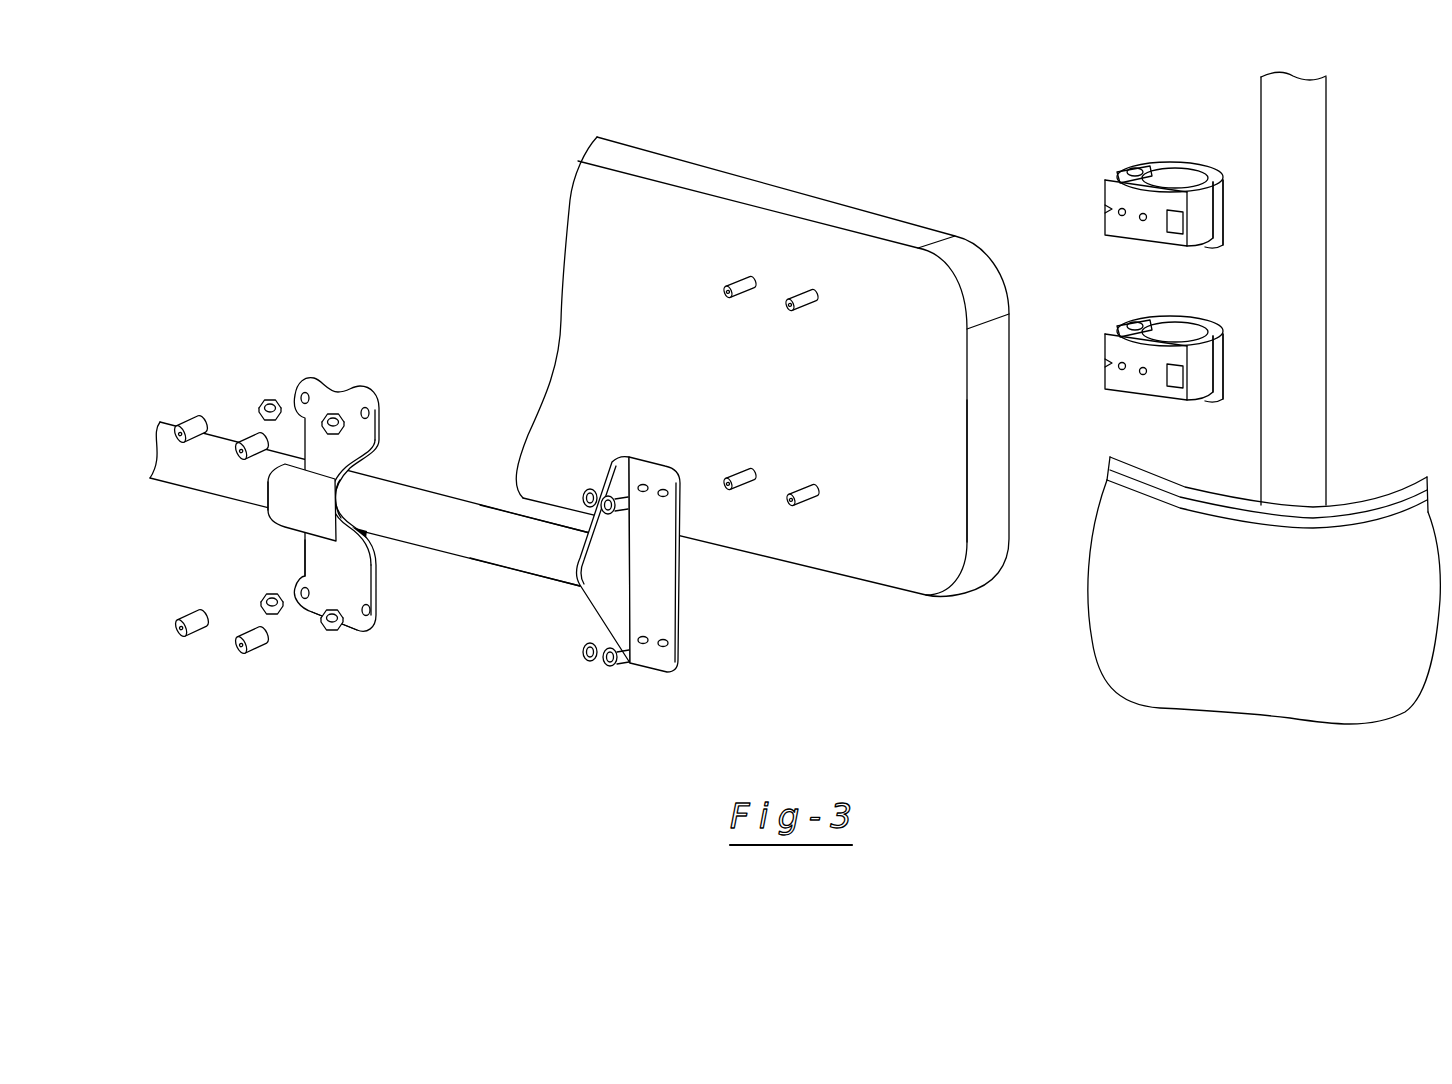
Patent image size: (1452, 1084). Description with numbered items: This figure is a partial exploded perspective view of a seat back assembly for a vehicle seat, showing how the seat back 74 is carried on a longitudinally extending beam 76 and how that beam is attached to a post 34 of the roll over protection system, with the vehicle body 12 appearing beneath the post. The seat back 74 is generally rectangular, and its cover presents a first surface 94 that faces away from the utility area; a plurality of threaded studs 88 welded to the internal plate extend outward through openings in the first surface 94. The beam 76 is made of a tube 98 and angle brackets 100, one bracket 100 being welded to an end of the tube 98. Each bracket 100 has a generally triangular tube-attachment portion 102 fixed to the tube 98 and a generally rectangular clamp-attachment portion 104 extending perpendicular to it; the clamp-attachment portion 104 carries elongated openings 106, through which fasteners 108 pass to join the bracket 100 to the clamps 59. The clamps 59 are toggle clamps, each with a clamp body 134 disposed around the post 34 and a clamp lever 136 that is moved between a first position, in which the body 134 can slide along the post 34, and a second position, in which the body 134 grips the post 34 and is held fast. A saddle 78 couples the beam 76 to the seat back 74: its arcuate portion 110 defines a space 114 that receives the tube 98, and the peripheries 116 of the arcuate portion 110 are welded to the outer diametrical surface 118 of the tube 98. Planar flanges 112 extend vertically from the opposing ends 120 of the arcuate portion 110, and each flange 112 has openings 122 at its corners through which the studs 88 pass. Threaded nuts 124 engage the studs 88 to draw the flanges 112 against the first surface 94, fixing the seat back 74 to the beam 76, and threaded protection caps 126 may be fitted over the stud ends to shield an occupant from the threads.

The vehicle body 12 is at (1265, 685).
The post 34 is at (1318, 278).
The clamp 59 is at (1225, 251).
The seat back 74 is at (835, 186).
The longitudinally extending beam 76 is at (370, 528).
The saddle 78 is at (324, 447).
The threaded stud 88 is at (738, 296).
The first surface 94 is at (916, 556).
The tube 98 is at (359, 502).
The angle bracket 100 is at (644, 573).
The tube-attachment portion 102 is at (600, 592).
The clamp-attachment portion 104 is at (673, 598).
The opening 106 is at (663, 489).
The fastener 108 is at (603, 511).
The arcuate portion 110 is at (307, 490).
The flange 112 is at (320, 378).
The space 114 is at (362, 532).
The periphery 116 is at (267, 493).
The outer diametrical surface 118 is at (475, 547).
The opposing end 120 is at (353, 463).
The opening 122 is at (304, 391).
The threaded nut 124 is at (258, 404).
The threaded protection cap 126 is at (250, 433).
The clamp body 134 is at (1150, 357).
The clamp lever 136 is at (1220, 207).